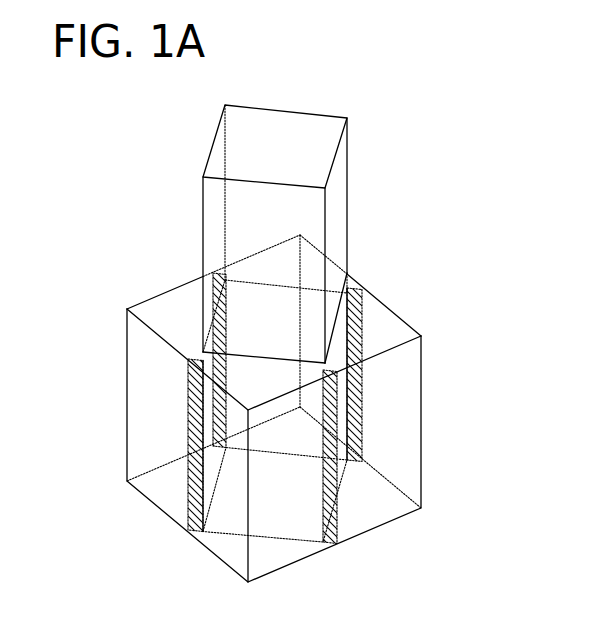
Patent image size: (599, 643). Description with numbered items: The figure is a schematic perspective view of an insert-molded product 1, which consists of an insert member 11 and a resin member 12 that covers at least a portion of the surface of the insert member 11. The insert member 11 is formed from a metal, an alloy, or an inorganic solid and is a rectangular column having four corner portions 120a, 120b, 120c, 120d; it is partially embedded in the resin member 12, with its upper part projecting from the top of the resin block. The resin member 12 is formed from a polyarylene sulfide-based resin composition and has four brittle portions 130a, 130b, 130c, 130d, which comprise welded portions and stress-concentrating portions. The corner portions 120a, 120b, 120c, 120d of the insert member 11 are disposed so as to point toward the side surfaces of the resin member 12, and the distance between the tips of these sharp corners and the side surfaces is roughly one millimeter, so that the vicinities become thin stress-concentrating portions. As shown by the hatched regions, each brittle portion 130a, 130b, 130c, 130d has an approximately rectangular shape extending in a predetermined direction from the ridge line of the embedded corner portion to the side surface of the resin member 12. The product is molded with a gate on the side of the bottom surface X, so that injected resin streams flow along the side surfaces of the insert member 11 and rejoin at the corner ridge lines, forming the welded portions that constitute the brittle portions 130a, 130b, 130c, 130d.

The insert-molded product 1 is at (387, 114).
The insert member 11 is at (279, 201).
The resin member 12 is at (281, 408).
The corner portion 120a is at (203, 184).
The corner portion 120b is at (203, 222).
The corner portion 120c is at (326, 220).
The corner portion 120d is at (348, 195).
The brittle portion 130a is at (213, 306).
The brittle portion 130b is at (188, 488).
The brittle portion 130c is at (337, 482).
The brittle portion 130d is at (362, 402).
The bottom surface X is at (337, 478).